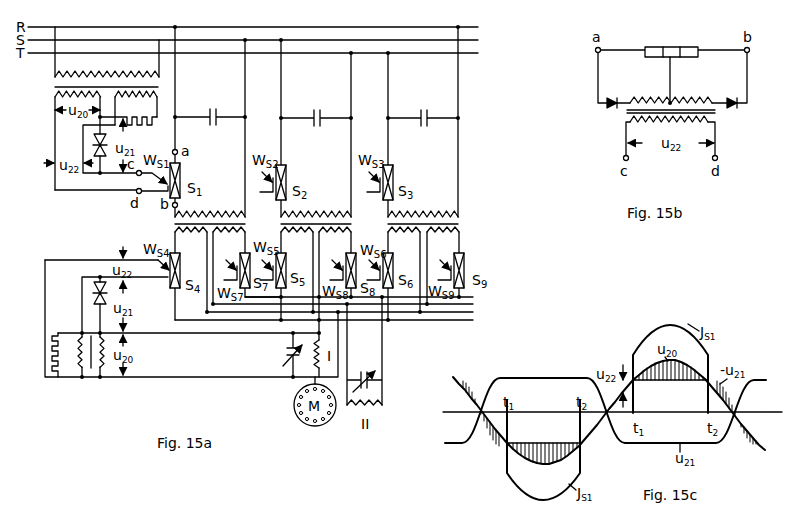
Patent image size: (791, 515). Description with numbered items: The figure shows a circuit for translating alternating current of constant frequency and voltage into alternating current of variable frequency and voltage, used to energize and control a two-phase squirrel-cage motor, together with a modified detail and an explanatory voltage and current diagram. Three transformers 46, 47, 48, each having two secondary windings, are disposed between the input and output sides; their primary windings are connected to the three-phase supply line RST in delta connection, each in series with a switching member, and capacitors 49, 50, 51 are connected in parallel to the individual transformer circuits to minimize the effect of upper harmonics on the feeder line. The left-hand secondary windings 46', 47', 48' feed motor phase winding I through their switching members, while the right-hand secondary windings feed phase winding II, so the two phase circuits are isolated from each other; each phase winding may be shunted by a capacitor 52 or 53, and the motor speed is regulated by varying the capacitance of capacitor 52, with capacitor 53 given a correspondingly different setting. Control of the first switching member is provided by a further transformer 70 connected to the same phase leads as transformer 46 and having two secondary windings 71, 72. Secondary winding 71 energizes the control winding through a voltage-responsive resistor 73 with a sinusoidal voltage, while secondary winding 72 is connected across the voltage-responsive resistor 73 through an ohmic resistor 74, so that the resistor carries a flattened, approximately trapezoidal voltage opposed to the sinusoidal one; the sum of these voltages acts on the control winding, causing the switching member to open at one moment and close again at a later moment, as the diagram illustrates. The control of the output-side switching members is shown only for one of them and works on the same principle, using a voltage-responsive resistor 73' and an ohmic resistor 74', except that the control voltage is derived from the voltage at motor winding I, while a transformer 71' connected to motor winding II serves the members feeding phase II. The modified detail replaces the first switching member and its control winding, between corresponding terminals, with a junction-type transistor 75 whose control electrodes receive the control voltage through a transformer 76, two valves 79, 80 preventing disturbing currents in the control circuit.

In FIG. 15A, the transformer 70 is at (57, 77).
In FIG. 15A, the secondary winding 71 is at (66, 140).
In FIG. 15A, the secondary winding 72 is at (157, 97).
In FIG. 15A, the voltage-responsive resistor 73 is at (85, 154).
In FIG. 15A, the ohmic resistor 74 is at (134, 128).
In FIG. 15A, the capacitor 49 is at (217, 121).
In FIG. 15A, the capacitor 50 is at (321, 121).
In FIG. 15A, the capacitor 51 is at (424, 121).
In FIG. 15A, the transformer 46 is at (198, 221).
In FIG. 15A, the transformer 47 is at (305, 222).
In FIG. 15A, the transformer 48 is at (438, 223).
In FIG. 15A, the left-hand secondary winding 46' is at (188, 273).
In FIG. 15A, the left-hand secondary winding 47' is at (287, 273).
In FIG. 15A, the left-hand secondary winding 48' is at (393, 273).
In FIG. 15A, the voltage-responsive resistor 73' is at (84, 295).
In FIG. 15A, the transformer 71' is at (90, 366).
In FIG. 15A, the ohmic resistor 74' is at (41, 355).
In FIG. 15A, the capacitor 52 is at (286, 348).
In FIG. 15A, the capacitor 53 is at (365, 371).
In FIG. 15B, the junction-type transistor 75 is at (683, 47).
In FIG. 15B, the transformer 76 is at (716, 120).
In FIG. 15B, the valve 79 is at (611, 98).
In FIG. 15B, the valve 80 is at (733, 98).